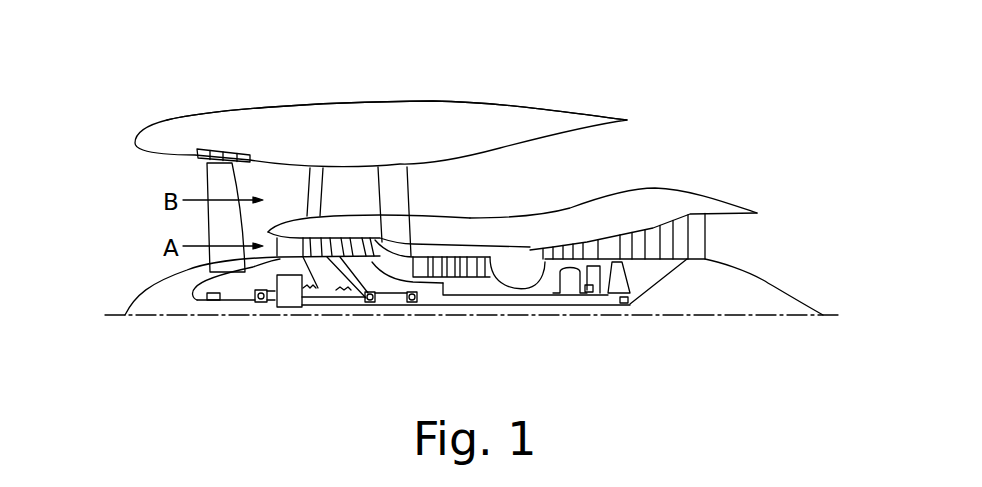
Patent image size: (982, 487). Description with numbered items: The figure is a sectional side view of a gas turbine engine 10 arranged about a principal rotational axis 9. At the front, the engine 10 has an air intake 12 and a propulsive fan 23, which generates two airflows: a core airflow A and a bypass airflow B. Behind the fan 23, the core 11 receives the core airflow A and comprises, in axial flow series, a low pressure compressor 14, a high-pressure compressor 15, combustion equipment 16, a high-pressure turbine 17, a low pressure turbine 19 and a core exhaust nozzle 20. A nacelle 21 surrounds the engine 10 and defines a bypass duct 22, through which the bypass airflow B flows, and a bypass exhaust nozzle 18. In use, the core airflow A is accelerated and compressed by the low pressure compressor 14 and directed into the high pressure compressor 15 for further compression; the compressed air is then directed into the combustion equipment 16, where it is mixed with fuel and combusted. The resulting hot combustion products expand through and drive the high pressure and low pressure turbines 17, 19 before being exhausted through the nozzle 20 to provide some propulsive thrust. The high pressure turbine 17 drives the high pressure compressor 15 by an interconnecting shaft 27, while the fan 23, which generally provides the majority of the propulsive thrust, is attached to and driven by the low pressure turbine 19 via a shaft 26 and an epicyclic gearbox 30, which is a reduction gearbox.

The principal rotational axis 9 is at (720, 315).
The gas turbine engine 10 is at (178, 114).
The core 11 is at (535, 233).
The air intake 12 is at (140, 175).
The low pressure compressor 14 is at (345, 245).
The high-pressure compressor 15 is at (463, 258).
The combustion equipment 16 is at (520, 266).
The high-pressure turbine 17 is at (573, 255).
The bypass exhaust nozzle 18 is at (712, 115).
The low pressure turbine 19 is at (677, 251).
The core exhaust nozzle 20 is at (760, 247).
The nacelle 21 is at (392, 112).
The bypass duct 22 is at (610, 158).
The propulsive fan 23 is at (214, 232).
The shaft 26 is at (433, 300).
The interconnecting shaft 27 is at (488, 298).
The epicyclic gearbox 30 is at (288, 307).